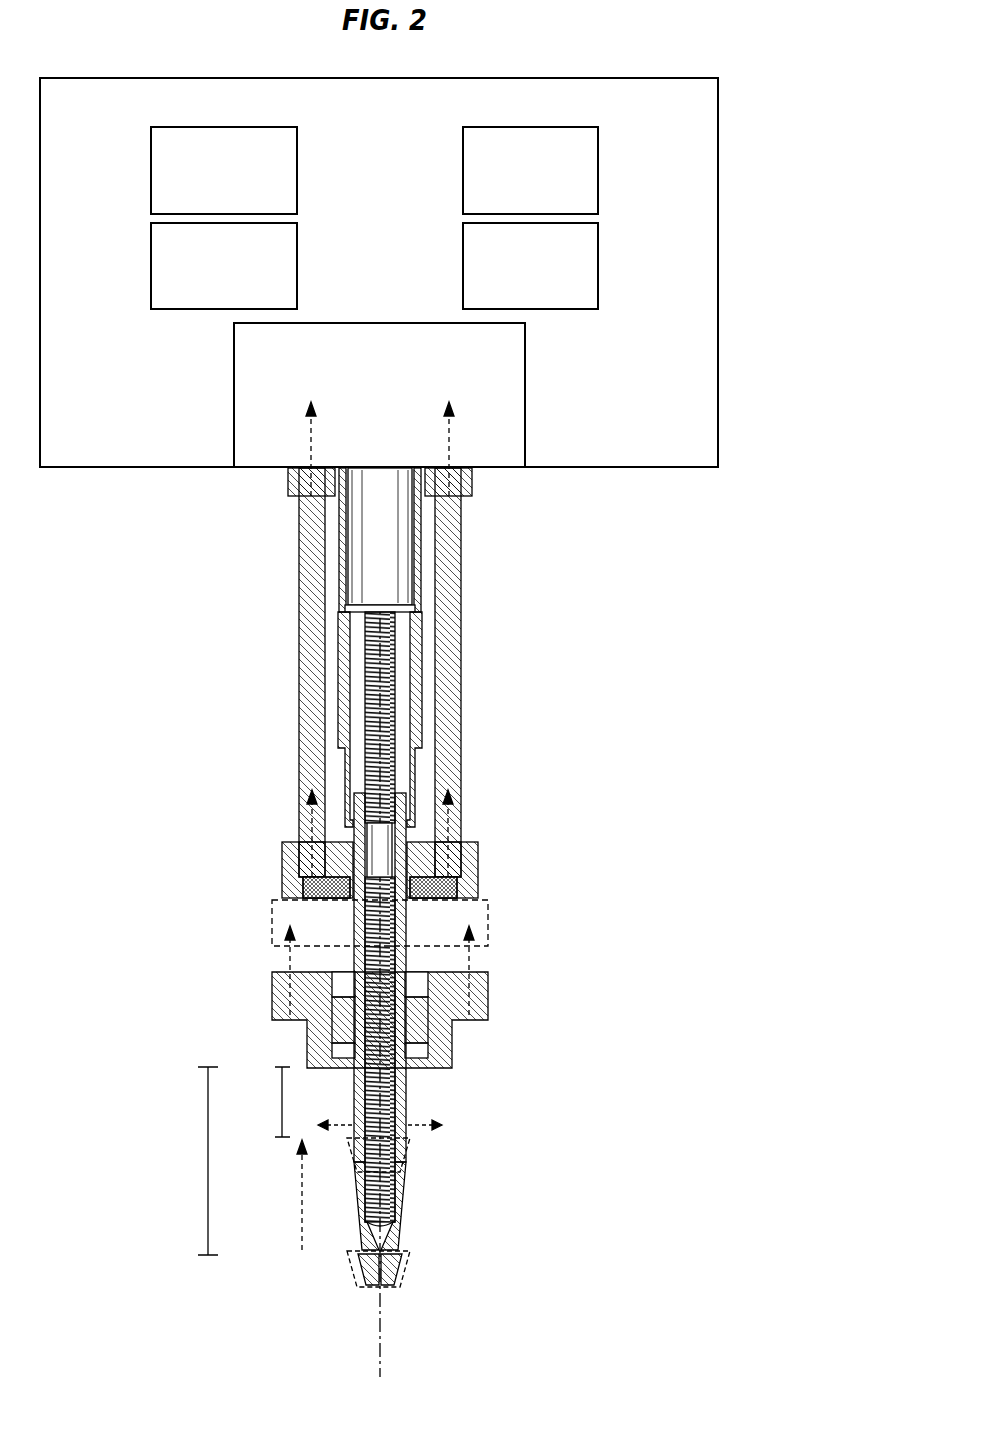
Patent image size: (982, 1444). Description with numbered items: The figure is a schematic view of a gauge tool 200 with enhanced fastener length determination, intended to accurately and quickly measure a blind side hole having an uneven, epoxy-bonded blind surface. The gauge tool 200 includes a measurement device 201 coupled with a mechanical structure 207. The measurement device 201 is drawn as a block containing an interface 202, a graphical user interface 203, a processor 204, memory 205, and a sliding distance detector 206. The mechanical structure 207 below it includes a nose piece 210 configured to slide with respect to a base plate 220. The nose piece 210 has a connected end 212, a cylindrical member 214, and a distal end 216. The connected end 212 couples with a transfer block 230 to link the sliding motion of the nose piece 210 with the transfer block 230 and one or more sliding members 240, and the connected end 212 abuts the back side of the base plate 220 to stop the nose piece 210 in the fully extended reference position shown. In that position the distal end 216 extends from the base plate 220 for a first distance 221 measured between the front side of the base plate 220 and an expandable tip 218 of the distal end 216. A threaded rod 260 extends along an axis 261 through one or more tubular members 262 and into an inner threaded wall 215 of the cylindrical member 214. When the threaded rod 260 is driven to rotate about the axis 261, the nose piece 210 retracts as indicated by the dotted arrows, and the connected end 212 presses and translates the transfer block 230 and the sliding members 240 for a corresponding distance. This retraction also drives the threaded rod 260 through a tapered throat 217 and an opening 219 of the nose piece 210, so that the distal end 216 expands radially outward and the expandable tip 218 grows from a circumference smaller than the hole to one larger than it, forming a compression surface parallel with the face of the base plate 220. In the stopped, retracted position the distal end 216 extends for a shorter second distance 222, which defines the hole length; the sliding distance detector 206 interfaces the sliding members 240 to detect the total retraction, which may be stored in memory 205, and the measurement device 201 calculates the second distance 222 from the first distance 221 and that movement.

The gauge tool 200 is at (808, 86).
The measurement device 201 is at (398, 171).
The interface 202 is at (242, 197).
The graphical user interface (GUI) 203 is at (548, 197).
The processor 204 is at (242, 294).
The memory 205 is at (548, 294).
The sliding distance detector 206 is at (398, 412).
The mechanical structure 207 is at (246, 570).
The nose piece 210 is at (515, 975).
The connected end 212 is at (270, 925).
The cylindrical member 214 is at (404, 1021).
The inner threaded wall 215 is at (395, 1100).
The distal end 216 is at (409, 1172).
The tapered throat 217 is at (362, 1229).
The expandable tip 218 is at (408, 1155).
The opening 219 is at (370, 1287).
The base plate 220 is at (450, 1045).
The first distance 221 is at (208, 1168).
The second distance 222 is at (282, 1100).
The transfer block 230 is at (478, 860).
The sliding members 240 is at (300, 697).
The threaded rod 260 is at (388, 643).
The axis 261 is at (380, 1335).
The tubular members 262 is at (415, 609).